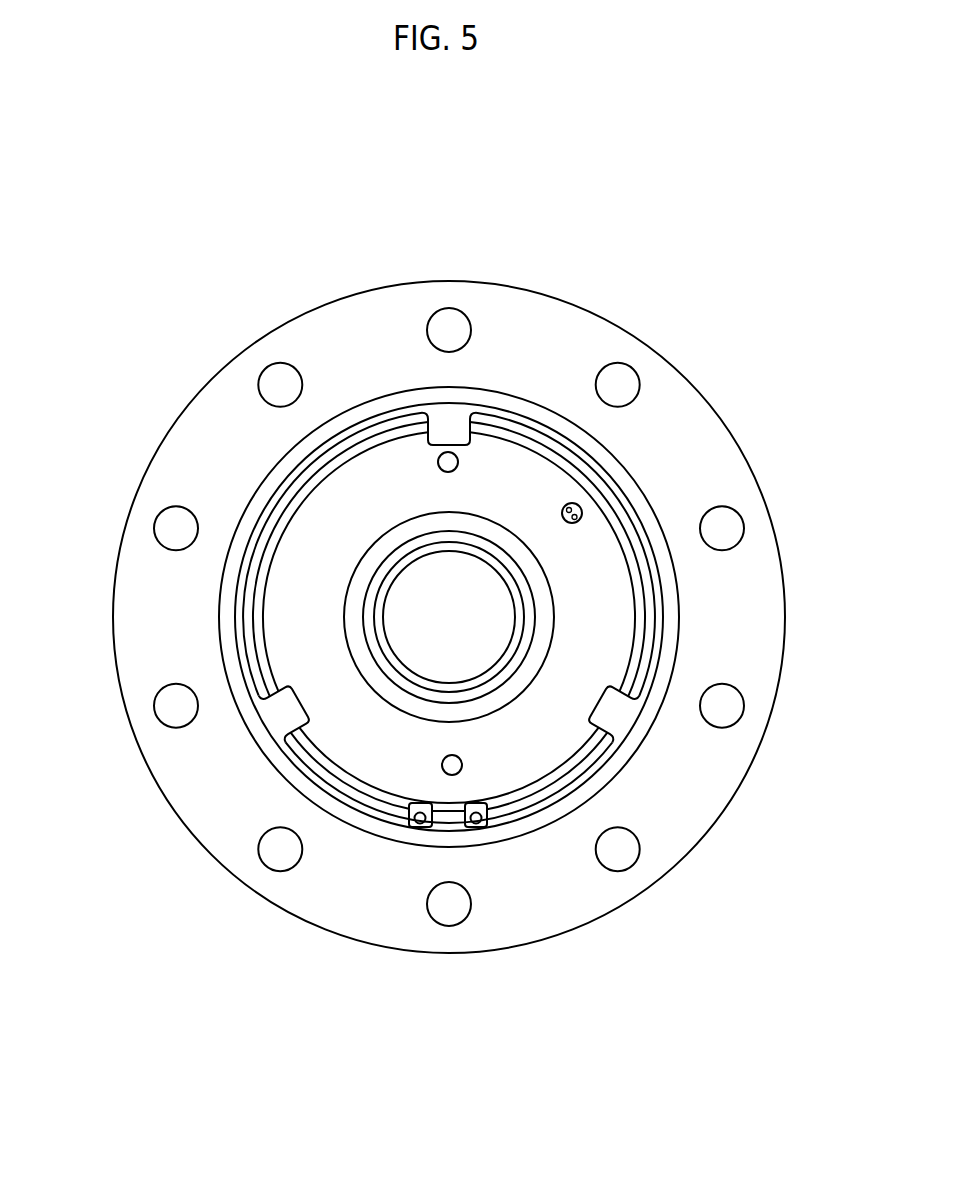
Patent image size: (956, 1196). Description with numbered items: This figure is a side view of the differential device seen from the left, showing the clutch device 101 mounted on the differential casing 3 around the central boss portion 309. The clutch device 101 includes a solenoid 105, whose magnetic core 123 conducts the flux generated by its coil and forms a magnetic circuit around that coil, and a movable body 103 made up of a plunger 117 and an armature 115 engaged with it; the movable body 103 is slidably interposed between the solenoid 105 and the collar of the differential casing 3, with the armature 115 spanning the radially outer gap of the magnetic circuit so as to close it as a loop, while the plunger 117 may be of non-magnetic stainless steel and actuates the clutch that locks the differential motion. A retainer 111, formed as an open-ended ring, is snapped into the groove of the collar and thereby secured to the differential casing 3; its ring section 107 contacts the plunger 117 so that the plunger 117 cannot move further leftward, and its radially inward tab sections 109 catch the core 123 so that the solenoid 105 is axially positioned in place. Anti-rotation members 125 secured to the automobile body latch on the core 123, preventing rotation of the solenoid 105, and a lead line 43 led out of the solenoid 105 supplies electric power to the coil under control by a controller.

The clutch device 101 is at (456, 200).
The differential casing 3 is at (358, 296).
The tab sections 109 is at (448, 432).
The solenoid 105 is at (353, 456).
The anti-rotation members 125 is at (458, 462).
The retainer 111 is at (598, 465).
The ring section 107 is at (622, 500).
The lead line 43 is at (578, 522).
The boss portion 309 is at (530, 613).
The magnetic core 123 is at (292, 620).
The movable body 103 is at (450, 826).
The armature 115 is at (522, 792).
The plunger 117 is at (550, 788).